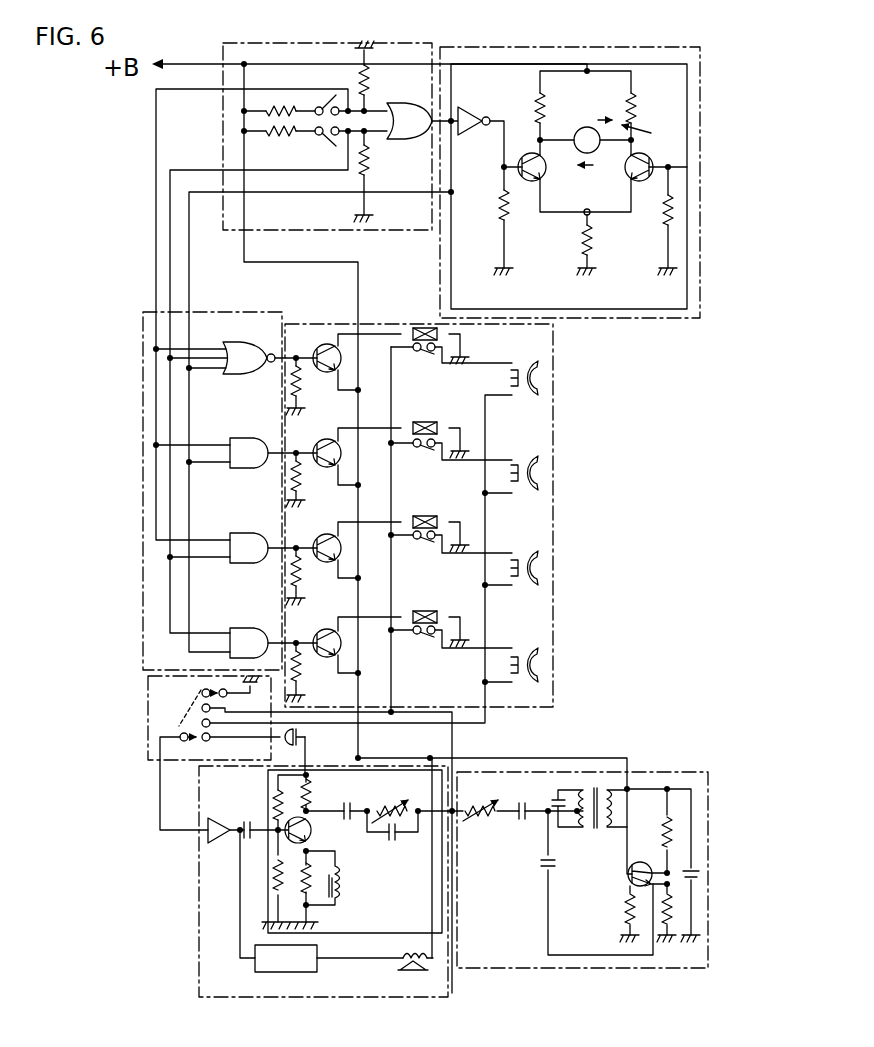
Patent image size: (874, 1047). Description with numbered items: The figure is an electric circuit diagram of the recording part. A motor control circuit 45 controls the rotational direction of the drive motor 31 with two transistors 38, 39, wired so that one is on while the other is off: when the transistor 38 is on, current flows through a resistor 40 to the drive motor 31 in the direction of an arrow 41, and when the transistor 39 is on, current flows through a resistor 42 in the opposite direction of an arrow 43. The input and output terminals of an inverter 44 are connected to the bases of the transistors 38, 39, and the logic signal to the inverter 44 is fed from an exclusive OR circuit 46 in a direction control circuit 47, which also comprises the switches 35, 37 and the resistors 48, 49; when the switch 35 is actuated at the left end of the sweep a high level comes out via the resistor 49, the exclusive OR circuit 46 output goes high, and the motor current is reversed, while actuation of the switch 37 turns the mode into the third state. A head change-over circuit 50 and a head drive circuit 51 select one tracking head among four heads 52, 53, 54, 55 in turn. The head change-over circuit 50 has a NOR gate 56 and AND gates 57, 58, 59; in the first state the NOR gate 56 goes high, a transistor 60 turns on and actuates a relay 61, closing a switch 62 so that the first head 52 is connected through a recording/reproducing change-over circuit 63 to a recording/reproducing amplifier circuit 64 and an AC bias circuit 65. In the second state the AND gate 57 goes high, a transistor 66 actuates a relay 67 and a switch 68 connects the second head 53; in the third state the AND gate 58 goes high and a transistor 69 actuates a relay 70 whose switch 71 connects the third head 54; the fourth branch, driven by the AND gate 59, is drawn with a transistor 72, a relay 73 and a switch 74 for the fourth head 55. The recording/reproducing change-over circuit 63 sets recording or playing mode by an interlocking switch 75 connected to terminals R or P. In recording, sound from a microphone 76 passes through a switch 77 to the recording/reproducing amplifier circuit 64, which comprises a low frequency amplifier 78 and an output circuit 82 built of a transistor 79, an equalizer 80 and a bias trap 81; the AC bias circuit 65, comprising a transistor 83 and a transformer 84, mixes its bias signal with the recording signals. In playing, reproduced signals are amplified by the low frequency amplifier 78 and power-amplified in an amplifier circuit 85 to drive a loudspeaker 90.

The drive motor 31 is at (602, 123).
The switch 35 is at (309, 94).
The switch 37 is at (323, 142).
The transistor 38 is at (546, 180).
The transistor 39 is at (646, 182).
The resistor 40 is at (640, 106).
The arrow 41 is at (593, 165).
The resistor 42 is at (545, 106).
The arrow 43 is at (651, 139).
The inverter 44 is at (470, 132).
The motor control circuit 45 is at (655, 318).
The exclusive OR circuit 46 is at (414, 140).
The direction control circuit 47 is at (392, 258).
The resistor 48 is at (372, 168).
The resistor 49 is at (372, 85).
The head change-over circuit 50 is at (240, 312).
The head drive circuit 51 is at (374, 325).
The first head 52 is at (526, 403).
The second head 53 is at (526, 495).
The third head 54 is at (526, 590).
The fourth head 55 is at (529, 684).
The NOR gate 56 is at (232, 342).
The AND gate 57 is at (237, 438).
The AND gate 58 is at (237, 533).
The AND gate 59 is at (237, 631).
The transistor 60 is at (326, 374).
The relay 61 is at (449, 343).
The switch 62 is at (424, 356).
The recording/reproducing change-over circuit 63 is at (148, 748).
The recording/reproducing amplifier circuit 64 is at (198, 940).
The AC bias circuit 65 is at (500, 968).
The transistor 66 is at (326, 474).
The relay 67 is at (439, 428).
The switch 68 is at (424, 452).
The transistor 69 is at (330, 569).
The relay 70 is at (436, 524).
The relay contact 71 is at (424, 544).
The transistor 72 is at (330, 662).
The relay coil 73 is at (436, 616).
The relay contact 74 is at (424, 638).
The interlocking switch 75 is at (186, 699).
The microphone 76 is at (296, 738).
The switch 77 is at (220, 737).
The low frequency amplifier 78 is at (226, 844).
The transistor 79 is at (312, 834).
The equalizer 80 is at (385, 809).
The bias trap 81 is at (347, 884).
The output circuit 82 is at (355, 933).
The transistor 83 is at (626, 880).
The transformer 84 is at (592, 832).
The amplifier circuit 85 is at (300, 972).
The loudspeaker 90 is at (415, 975).